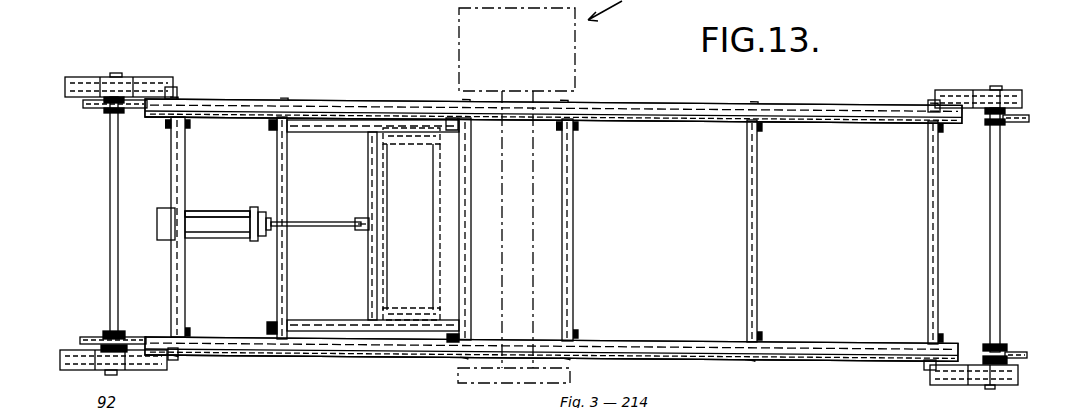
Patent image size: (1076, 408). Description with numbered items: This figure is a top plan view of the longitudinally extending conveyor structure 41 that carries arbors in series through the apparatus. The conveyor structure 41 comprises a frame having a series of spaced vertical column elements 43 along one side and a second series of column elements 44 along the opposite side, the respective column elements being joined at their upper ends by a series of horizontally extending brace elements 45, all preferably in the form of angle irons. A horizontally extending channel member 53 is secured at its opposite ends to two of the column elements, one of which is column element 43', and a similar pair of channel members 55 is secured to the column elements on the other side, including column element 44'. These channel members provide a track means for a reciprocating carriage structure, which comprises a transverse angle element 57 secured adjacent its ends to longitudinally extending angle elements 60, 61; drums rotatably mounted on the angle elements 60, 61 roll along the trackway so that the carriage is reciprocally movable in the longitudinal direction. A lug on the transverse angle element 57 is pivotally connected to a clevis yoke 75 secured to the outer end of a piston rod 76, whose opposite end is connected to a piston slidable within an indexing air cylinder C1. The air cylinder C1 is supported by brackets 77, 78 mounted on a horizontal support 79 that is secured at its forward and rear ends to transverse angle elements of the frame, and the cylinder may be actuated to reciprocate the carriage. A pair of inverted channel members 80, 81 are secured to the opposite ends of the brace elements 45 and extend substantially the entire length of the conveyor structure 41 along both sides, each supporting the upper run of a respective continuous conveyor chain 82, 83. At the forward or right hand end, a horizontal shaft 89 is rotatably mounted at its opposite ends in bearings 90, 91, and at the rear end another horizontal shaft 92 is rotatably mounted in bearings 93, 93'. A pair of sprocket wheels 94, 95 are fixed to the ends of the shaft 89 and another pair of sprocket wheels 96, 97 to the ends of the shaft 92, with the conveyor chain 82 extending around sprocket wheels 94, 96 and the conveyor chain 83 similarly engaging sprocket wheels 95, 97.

The conveyor structure 41 is at (246, 82).
The vertical column elements 43 is at (553, 320).
The vertical column element 43' is at (254, 323).
The column elements 44 is at (539, 138).
The column element 44' is at (254, 138).
The horizontally extending brace elements 45 is at (276, 190).
The channel member 53 is at (316, 320).
The channel members 55 is at (326, 133).
The transverse angle element 57 is at (367, 193).
The longitudinally extending angle element 60 is at (403, 310).
The longitudinally extending angle element 61 is at (410, 146).
The clevis yoke 75 is at (363, 231).
The piston rod 76 is at (318, 228).
The bracket 77 is at (250, 240).
The bracket 78 is at (192, 211).
The horizontal support 79 is at (160, 232).
The indexing air cylinder C1 is at (228, 240).
The inverted channel member 80 is at (838, 347).
The inverted channel member 81 is at (865, 124).
The conveyor chain 82 is at (802, 357).
The conveyor chain 83 is at (845, 106).
The horizontal shaft 89 is at (1003, 207).
The bearing 90 is at (1018, 381).
The bearing 91 is at (1012, 97).
The horizontal shaft 92 is at (109, 205).
The bearing 93 is at (121, 67).
The bearing 93' is at (119, 371).
The sprocket wheel 94 is at (1020, 352).
The sprocket wheel 95 is at (1028, 120).
The sprocket wheel 96 is at (90, 337).
The sprocket wheel 97 is at (86, 103).